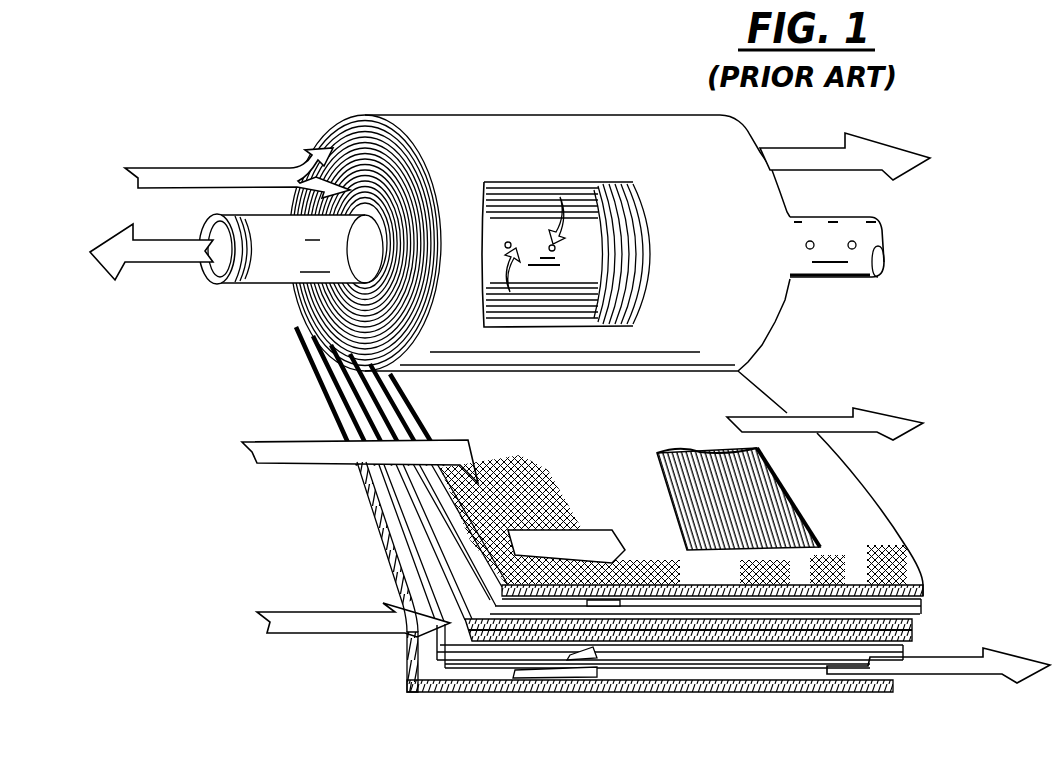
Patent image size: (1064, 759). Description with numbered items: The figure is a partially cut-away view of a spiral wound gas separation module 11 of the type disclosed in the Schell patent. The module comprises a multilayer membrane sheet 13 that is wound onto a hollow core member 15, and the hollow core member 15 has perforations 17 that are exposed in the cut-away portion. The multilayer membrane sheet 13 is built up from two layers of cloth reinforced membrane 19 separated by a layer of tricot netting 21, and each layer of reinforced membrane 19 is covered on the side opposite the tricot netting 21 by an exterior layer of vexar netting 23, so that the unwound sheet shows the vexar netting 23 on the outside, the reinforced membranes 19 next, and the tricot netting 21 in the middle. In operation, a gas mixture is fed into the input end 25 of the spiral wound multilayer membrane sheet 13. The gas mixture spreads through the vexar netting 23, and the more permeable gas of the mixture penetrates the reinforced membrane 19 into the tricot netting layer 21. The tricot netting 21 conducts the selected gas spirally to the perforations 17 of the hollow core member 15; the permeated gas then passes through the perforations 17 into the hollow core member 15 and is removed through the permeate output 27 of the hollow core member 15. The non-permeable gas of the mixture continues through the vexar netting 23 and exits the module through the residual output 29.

The spiral wound gas separation module 11 is at (292, 334).
The multilayer membrane sheet 13 is at (372, 522).
The hollow core member 15 is at (810, 281).
The perforations 17 is at (550, 247).
The cloth reinforced membrane 19 is at (924, 612).
The tricot netting 21 is at (915, 636).
The vexar netting 23 is at (862, 493).
The input end 25 is at (318, 138).
The permeate output 27 is at (134, 252).
The residual output 29 is at (869, 156).